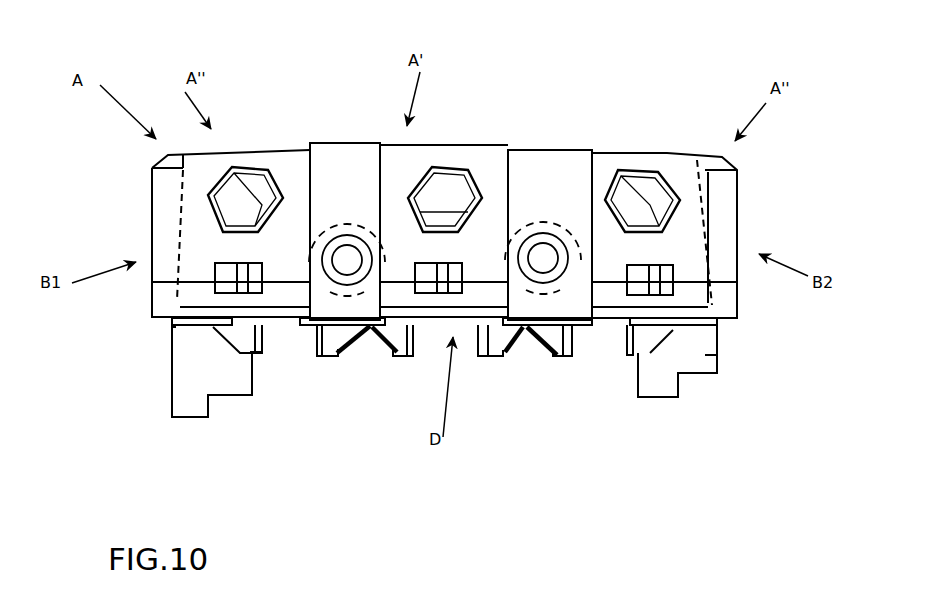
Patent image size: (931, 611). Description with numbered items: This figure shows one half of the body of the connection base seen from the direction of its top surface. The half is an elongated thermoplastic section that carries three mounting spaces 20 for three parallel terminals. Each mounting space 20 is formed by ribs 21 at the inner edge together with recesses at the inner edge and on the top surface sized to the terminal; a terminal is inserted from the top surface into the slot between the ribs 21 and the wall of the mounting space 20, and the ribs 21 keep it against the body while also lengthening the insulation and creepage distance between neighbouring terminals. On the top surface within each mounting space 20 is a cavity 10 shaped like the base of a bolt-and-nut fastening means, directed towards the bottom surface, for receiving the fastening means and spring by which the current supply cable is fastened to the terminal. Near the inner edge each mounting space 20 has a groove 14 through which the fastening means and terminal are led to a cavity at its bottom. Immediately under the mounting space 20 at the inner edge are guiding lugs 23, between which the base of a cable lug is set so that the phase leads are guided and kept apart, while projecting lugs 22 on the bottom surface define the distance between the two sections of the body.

The cavity 10 is at (268, 183).
The groove 14 is at (208, 327).
The mounting space 20 is at (220, 158).
The rib 21 is at (175, 410).
The projecting lug 22 is at (178, 353).
The guiding lug 23 is at (250, 353).